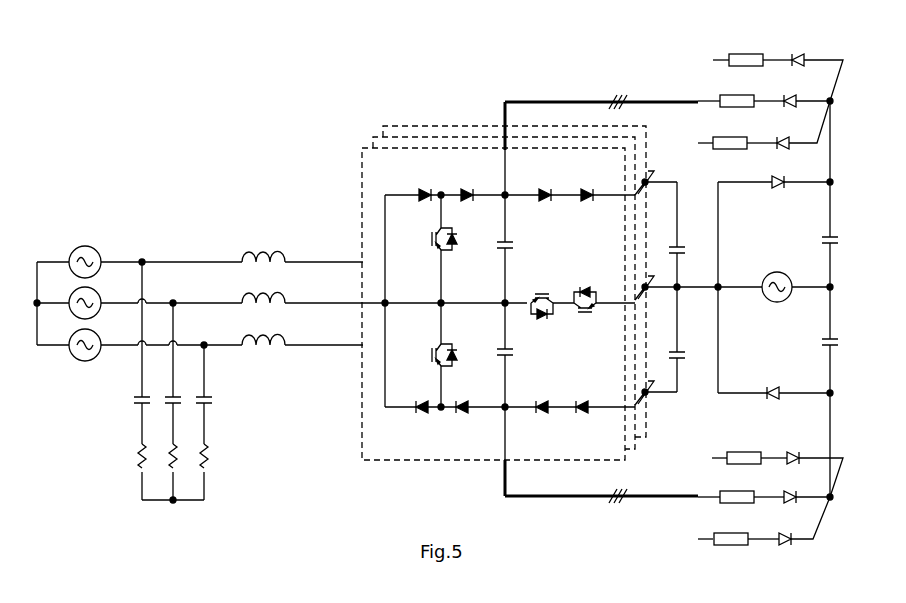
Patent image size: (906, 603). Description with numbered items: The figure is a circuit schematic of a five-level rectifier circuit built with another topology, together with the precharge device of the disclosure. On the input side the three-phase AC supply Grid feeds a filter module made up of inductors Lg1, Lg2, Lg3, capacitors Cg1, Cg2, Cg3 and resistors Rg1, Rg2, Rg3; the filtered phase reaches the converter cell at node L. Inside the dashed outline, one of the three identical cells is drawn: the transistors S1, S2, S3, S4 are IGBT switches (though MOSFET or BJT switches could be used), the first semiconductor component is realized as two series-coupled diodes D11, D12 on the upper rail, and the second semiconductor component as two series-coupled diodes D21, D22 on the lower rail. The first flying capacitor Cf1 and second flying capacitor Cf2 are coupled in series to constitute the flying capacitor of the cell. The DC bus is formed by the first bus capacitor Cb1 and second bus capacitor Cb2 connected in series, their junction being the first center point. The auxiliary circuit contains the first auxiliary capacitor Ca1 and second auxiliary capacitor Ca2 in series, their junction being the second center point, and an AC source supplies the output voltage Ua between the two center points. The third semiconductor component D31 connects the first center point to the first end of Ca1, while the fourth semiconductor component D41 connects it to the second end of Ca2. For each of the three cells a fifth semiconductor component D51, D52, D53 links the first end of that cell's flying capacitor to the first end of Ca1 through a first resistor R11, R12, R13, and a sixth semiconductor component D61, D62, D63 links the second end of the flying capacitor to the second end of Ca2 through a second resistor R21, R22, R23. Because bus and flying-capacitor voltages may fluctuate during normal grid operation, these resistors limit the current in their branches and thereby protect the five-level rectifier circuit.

The three-phase grid voltage sources Grid is at (138, 297).
The inductor Lg1 is at (302, 332).
The inductor Lg2 is at (313, 290).
The inductor Lg3 is at (302, 248).
The capacitor Cg1 is at (214, 394).
The capacitor Cg2 is at (183, 373).
The capacitor Cg3 is at (152, 353).
The resistor Rg1 is at (216, 467).
The resistor Rg2 is at (185, 467).
The resistor Rg3 is at (154, 467).
The input node of converter cell L is at (380, 304).
The transistor S1 is at (434, 239).
The transistor S2 is at (432, 355).
The transistor S3 is at (542, 295).
The transistor S4 is at (585, 291).
The first semiconductor component D11 is at (546, 189).
The first semiconductor component D12 is at (588, 189).
The second semiconductor component D21 is at (583, 415).
The second semiconductor component D22 is at (541, 415).
The first flying capacitor Cf1 is at (518, 241).
The second flying capacitor Cf2 is at (518, 348).
The first bus capacitor Cb1 is at (671, 245).
The second bus capacitor Cb2 is at (671, 350).
The output voltage Ua is at (777, 281).
The first auxiliary capacitor Ca1 is at (823, 233).
The second auxiliary capacitor Ca2 is at (823, 335).
The third semiconductor component D31 is at (774, 176).
The fourth semiconductor component D41 is at (774, 386).
The first resistor R11 is at (737, 136).
The first resistor R12 is at (741, 94).
The first resistor R13 is at (752, 53).
The fifth semiconductor component D51 is at (801, 125).
The fifth semiconductor component D52 is at (804, 94).
The fifth semiconductor component D53 is at (815, 71).
The second resistor R21 is at (738, 533).
The second resistor R22 is at (741, 491).
The second resistor R23 is at (749, 452).
The sixth semiconductor component D61 is at (800, 521).
The sixth semiconductor component D62 is at (802, 491).
The sixth semiconductor component D63 is at (812, 468).